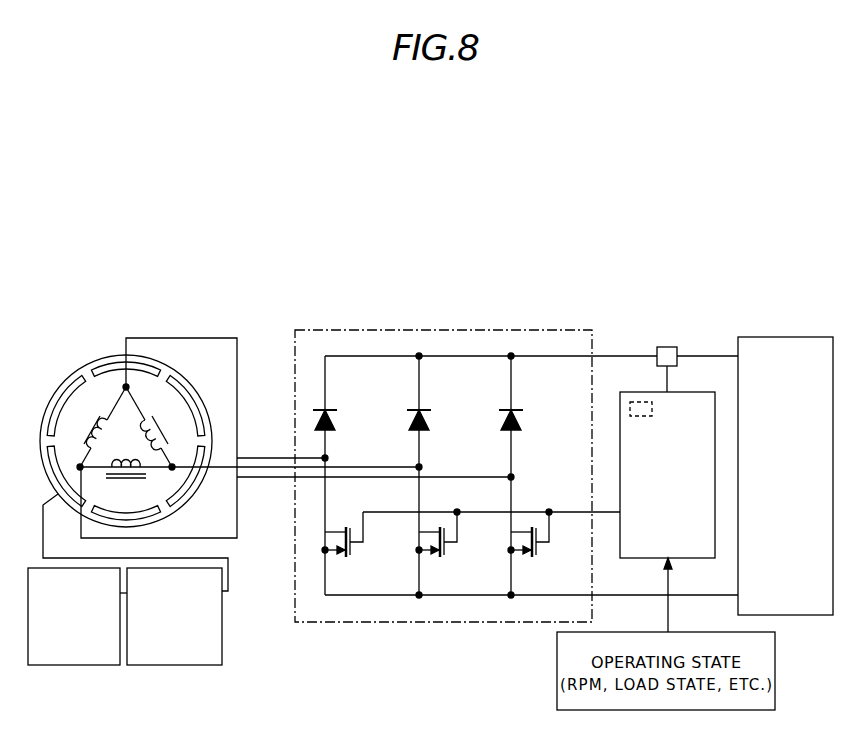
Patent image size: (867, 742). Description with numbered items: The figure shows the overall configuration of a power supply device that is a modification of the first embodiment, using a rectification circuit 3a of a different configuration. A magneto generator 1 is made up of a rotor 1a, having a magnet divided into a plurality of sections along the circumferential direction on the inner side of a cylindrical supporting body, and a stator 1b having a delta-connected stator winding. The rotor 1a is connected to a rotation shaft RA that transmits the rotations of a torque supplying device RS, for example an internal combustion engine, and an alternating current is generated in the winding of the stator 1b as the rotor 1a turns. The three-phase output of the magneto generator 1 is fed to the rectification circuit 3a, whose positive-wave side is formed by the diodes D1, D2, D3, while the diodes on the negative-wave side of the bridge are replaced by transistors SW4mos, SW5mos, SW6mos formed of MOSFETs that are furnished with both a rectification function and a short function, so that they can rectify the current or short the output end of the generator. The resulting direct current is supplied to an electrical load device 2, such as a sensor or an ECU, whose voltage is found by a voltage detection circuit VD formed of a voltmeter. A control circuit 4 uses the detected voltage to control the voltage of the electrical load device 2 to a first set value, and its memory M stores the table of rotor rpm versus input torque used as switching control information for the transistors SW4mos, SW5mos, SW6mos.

The magneto generator 1 is at (155, 302).
The rotor 1a is at (78, 370).
The stator 1b is at (137, 400).
The electrical load device 2 is at (813, 337).
The rectification circuit 3a is at (547, 330).
The control circuit 4 is at (704, 392).
The voltage detection circuit VD is at (668, 346).
The memory M is at (635, 401).
The diode D1 is at (334, 428).
The diode D2 is at (428, 428).
The diode D3 is at (520, 428).
The transistor SW4mos is at (328, 553).
The transistor SW5mos is at (422, 553).
The transistor SW6mos is at (514, 553).
The torque supplying device RS is at (76, 665).
The rotation shaft RA is at (172, 665).